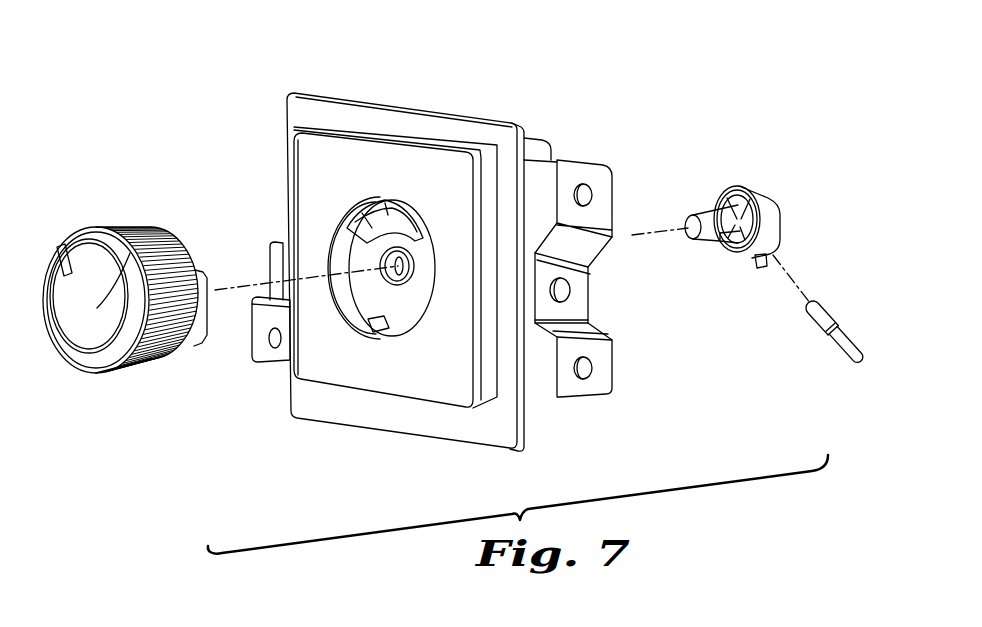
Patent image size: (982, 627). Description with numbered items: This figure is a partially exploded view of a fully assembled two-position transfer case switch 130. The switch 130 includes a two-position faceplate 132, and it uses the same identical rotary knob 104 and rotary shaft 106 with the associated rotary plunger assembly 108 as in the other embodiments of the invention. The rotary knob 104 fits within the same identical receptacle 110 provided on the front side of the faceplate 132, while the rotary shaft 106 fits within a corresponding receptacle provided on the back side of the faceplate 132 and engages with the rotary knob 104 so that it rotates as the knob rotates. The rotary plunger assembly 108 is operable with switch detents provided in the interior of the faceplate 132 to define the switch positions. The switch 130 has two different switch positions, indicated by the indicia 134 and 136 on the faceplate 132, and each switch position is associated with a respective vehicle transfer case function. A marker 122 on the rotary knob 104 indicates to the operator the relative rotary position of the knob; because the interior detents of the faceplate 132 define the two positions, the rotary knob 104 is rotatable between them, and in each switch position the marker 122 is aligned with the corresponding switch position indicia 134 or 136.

The two-position transfer case switch 130 is at (238, 113).
The rotary knob 104 is at (137, 226).
The marker 122 is at (60, 249).
The two-position faceplate 132 is at (387, 430).
The indicia 134 is at (340, 162).
The indicia 136 is at (423, 172).
The receptacle 110 is at (343, 292).
The rotary shaft 106 is at (737, 186).
The rotary plunger assembly 108 is at (827, 332).